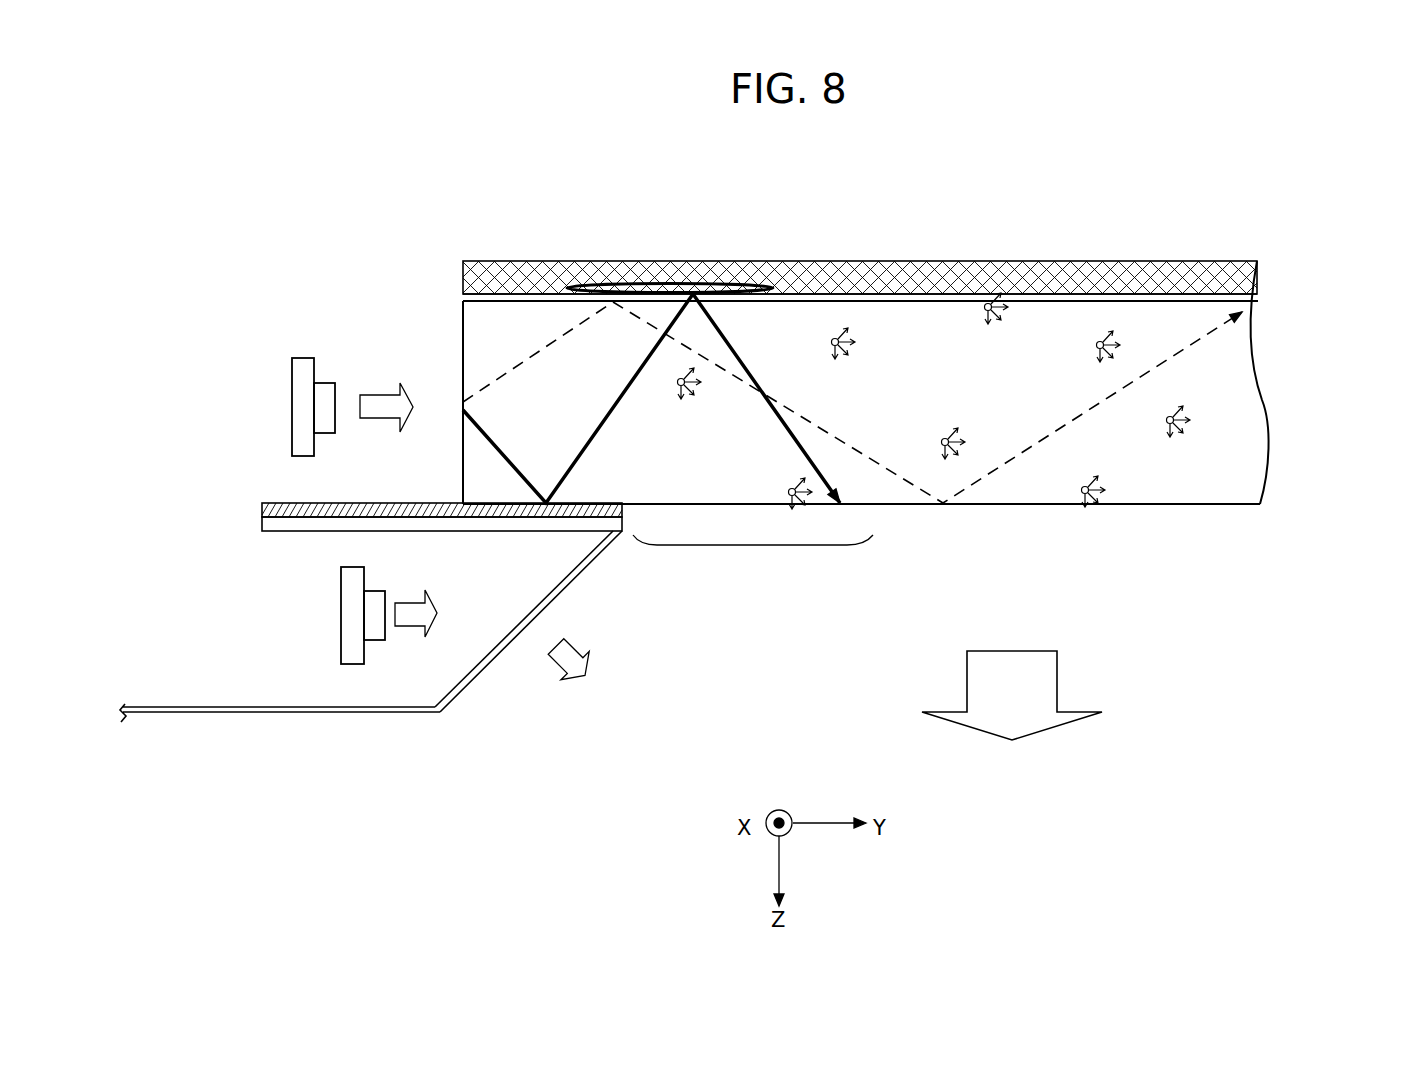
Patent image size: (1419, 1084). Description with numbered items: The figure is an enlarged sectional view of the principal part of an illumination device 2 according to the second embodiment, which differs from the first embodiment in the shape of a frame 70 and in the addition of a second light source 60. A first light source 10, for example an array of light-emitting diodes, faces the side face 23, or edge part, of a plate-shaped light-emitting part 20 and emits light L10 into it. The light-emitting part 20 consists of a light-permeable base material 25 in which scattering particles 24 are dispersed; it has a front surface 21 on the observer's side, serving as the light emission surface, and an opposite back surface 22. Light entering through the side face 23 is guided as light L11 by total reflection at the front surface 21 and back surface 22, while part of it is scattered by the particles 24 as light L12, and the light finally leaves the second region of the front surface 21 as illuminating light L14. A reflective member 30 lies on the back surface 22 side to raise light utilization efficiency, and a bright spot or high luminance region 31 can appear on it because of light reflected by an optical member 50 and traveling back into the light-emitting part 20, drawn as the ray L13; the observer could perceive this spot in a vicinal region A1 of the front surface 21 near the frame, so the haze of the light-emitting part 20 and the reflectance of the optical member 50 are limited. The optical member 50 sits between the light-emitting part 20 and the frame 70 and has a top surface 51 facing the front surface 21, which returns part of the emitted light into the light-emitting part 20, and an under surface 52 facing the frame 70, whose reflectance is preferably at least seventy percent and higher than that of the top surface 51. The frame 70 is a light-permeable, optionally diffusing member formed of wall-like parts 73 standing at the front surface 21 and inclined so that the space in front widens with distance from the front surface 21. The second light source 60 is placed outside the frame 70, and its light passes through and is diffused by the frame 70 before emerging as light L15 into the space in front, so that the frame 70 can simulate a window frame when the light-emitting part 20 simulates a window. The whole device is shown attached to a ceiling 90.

The illumination device 2 is at (1218, 175).
The light source 10 is at (292, 403).
The light-emitting part 20 is at (1235, 472).
The front surface 21 is at (1237, 504).
The back surface 22 is at (1208, 300).
The side face 23 is at (463, 355).
The particles 24 is at (835, 338).
The base material 25 is at (928, 347).
The reflective member 30 is at (1037, 262).
The high luminance region 31 is at (667, 262).
The optical member 50 is at (440, 615).
The top surface 51 is at (613, 502).
The under surface 52 is at (503, 525).
The light source 60 is at (357, 665).
The frame 70 is at (528, 673).
The wall-like parts 73 is at (487, 668).
The ceiling 90 is at (275, 710).
The light L10 is at (362, 380).
The light undergoing total reflection L11 is at (543, 353).
The scattered light L12 is at (1110, 341).
The light ray reflected by reflector plate L13 is at (625, 388).
The illuminating light L14 is at (1060, 727).
The light L15 is at (585, 675).
The vicinal region A1 is at (753, 545).